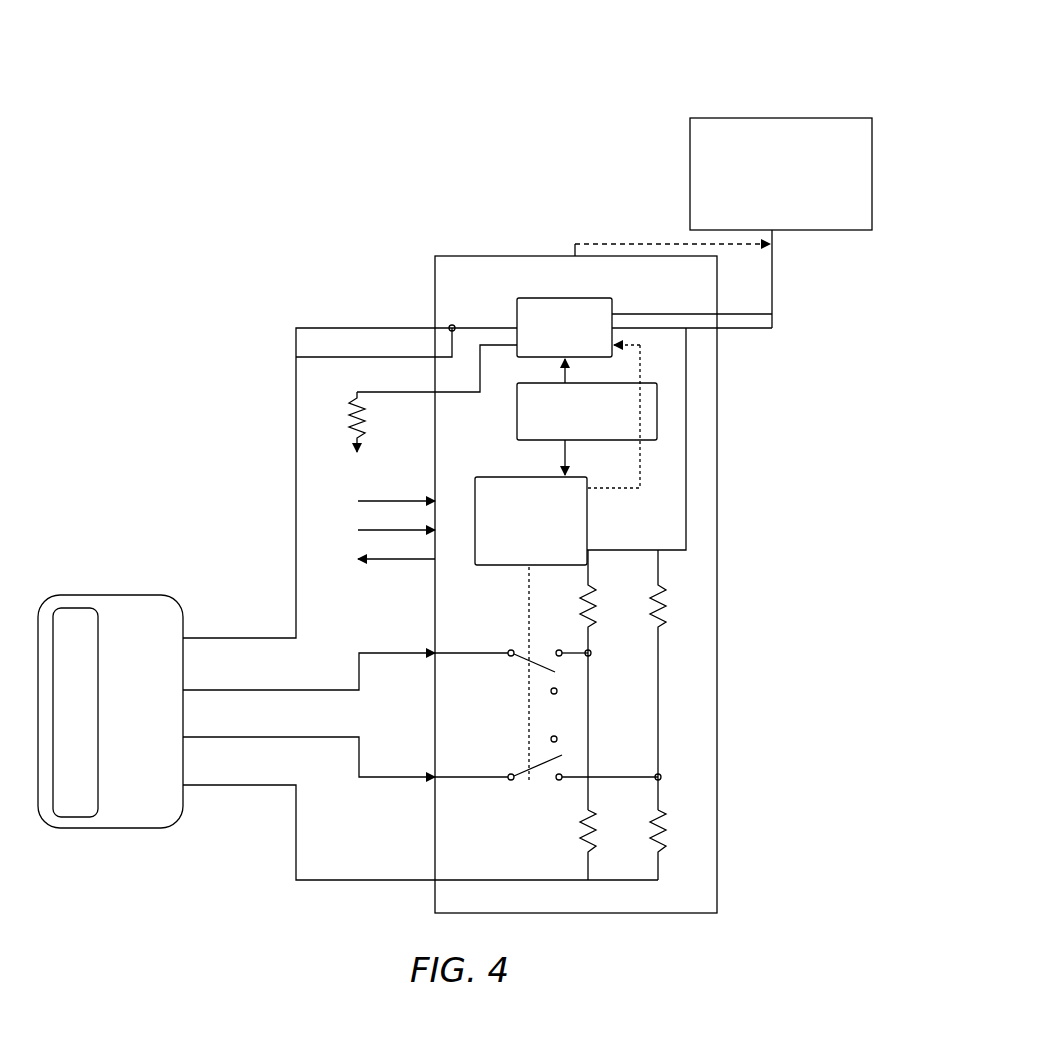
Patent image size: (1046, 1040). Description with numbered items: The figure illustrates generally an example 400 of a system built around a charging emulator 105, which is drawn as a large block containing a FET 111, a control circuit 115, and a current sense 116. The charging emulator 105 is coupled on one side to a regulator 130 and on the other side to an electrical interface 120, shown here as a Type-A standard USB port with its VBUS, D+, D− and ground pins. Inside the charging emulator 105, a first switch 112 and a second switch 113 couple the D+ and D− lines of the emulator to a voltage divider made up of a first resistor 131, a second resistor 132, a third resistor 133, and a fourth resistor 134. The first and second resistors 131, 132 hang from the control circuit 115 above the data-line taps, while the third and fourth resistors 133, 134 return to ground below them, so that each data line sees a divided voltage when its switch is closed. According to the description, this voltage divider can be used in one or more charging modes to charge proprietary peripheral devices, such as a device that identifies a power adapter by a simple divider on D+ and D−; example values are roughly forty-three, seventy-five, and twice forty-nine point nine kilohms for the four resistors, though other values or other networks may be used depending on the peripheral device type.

The system example 400 is at (690, 50).
The regulator 130 is at (770, 118).
The charging emulator 105 is at (452, 256).
The FET 111 is at (548, 298).
The current sense 116 is at (517, 400).
The control circuit 115 is at (492, 477).
The electrical interface 120 is at (165, 595).
The first switch 112 is at (520, 676).
The second switch 113 is at (522, 750).
The first resistor 131 is at (593, 620).
The second resistor 132 is at (663, 620).
The third resistor 133 is at (592, 810).
The fourth resistor 134 is at (662, 810).